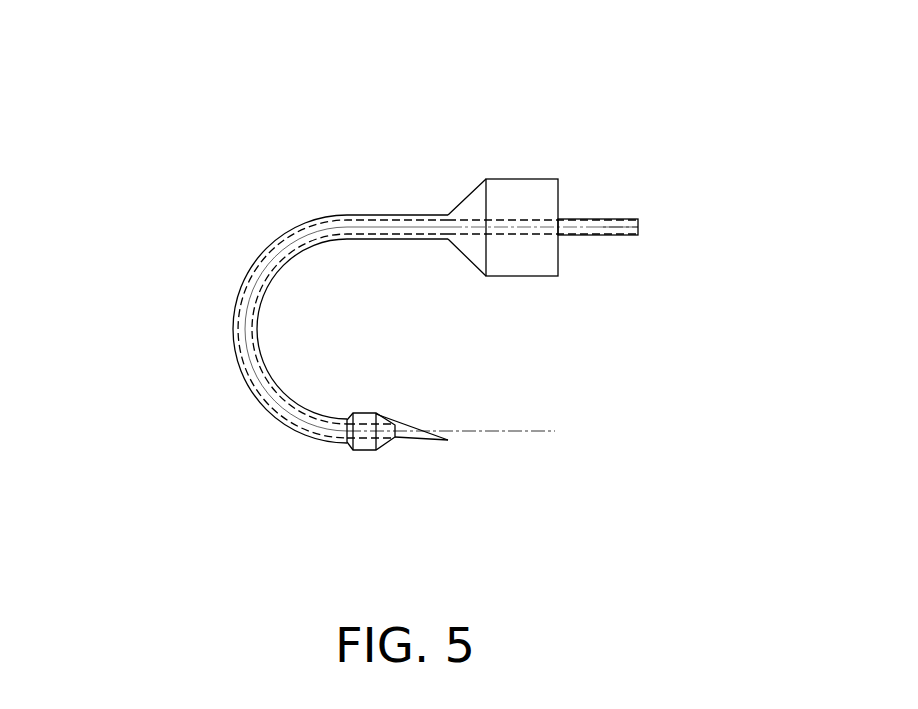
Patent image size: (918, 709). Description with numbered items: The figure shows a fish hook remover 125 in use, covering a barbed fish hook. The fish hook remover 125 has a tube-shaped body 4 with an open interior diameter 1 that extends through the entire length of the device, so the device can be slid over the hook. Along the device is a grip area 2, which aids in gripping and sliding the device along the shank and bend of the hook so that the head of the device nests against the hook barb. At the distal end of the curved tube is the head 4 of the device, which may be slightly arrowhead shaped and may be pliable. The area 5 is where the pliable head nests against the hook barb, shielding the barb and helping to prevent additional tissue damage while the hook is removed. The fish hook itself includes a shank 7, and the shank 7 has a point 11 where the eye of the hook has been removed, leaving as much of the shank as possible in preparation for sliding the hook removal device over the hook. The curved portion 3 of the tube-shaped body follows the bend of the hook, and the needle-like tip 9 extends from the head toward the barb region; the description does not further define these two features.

The fish hook remover 125 is at (166, 76).
The open interior diameter 1 is at (302, 222).
The grip area 2 is at (482, 180).
The curved portion 3 is at (250, 270).
The head 4 is at (352, 450).
The area where device head nests against hook barb 5 is at (378, 418).
The shank 7 is at (575, 219).
The needle tip 9 is at (410, 427).
The point 11 is at (612, 226).